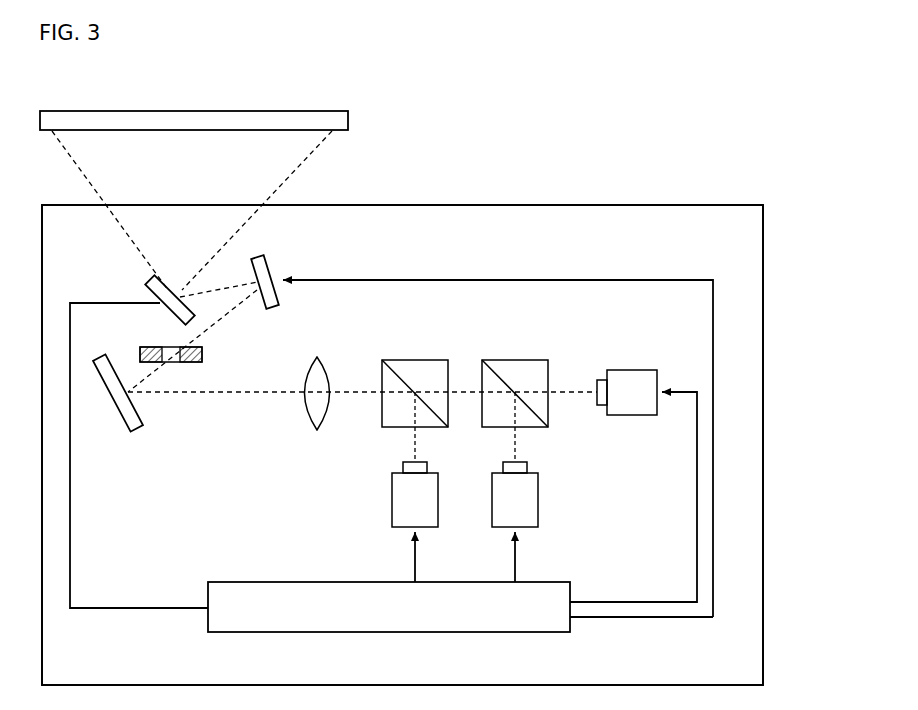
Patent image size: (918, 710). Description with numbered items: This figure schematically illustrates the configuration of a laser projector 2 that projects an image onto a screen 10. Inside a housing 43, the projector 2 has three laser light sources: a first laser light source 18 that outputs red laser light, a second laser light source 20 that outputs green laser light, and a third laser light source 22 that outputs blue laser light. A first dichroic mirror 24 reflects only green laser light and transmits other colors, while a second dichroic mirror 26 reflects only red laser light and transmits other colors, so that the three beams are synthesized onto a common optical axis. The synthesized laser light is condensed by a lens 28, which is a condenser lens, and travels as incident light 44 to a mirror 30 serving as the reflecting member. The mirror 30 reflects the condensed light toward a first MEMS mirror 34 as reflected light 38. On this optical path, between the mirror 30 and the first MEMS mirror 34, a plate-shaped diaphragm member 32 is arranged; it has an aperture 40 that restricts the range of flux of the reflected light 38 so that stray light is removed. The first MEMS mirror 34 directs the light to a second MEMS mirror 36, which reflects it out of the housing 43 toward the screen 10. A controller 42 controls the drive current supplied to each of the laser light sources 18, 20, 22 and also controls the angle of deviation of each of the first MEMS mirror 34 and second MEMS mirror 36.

The projector 2 is at (695, 205).
The screen 10 is at (307, 112).
The first laser light source 18 is at (438, 500).
The second laser light source 20 is at (538, 500).
The third laser light source 22 is at (620, 370).
The first dichroic mirror 24 is at (510, 360).
The second dichroic mirror 26 is at (410, 360).
The lens 28 is at (323, 357).
The mirror 30 is at (118, 422).
The diaphragm member 32 is at (202, 352).
The first MEMS mirror 34 is at (262, 258).
The second MEMS mirror 36 is at (150, 280).
The reflected light 38 is at (215, 322).
The aperture 40 is at (163, 347).
The controller 42 is at (545, 632).
The housing 43 is at (764, 247).
The incident light 44 is at (205, 393).